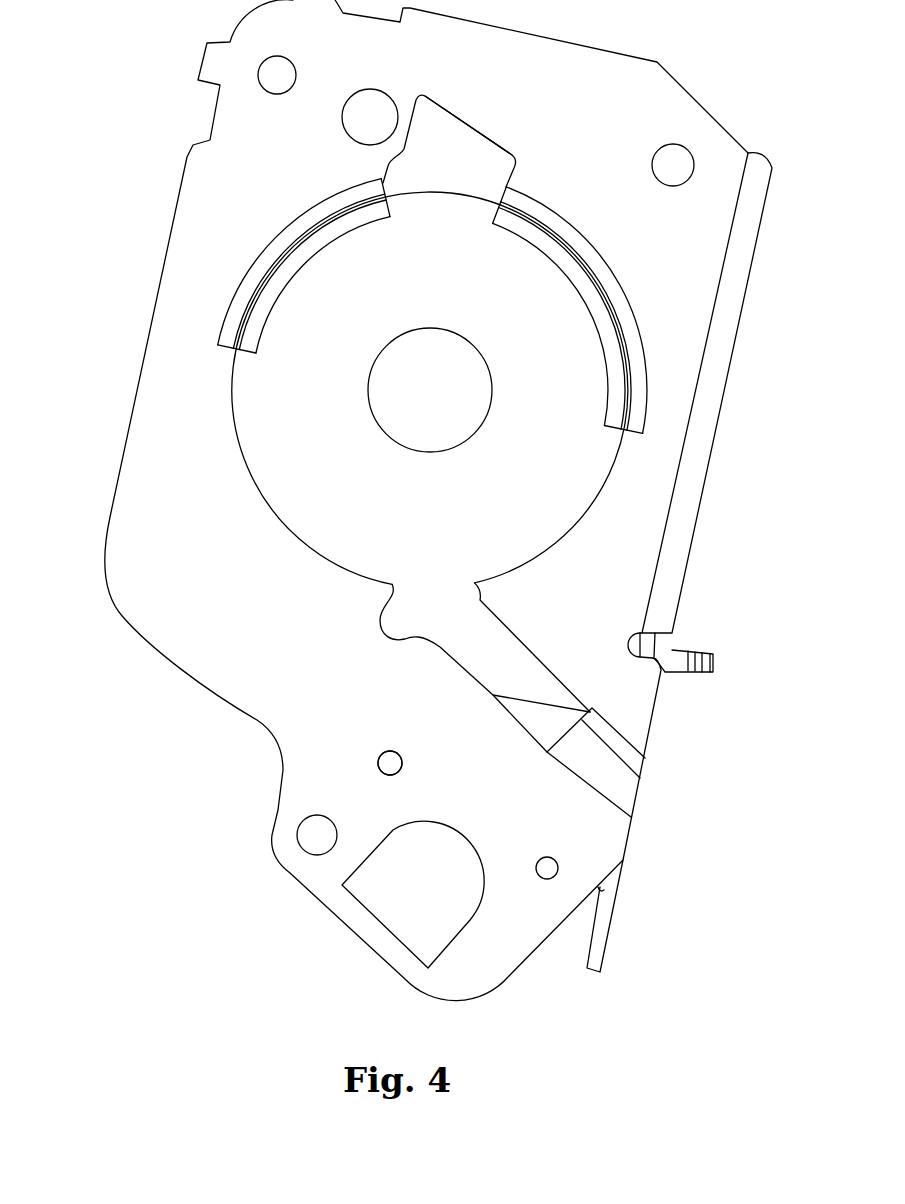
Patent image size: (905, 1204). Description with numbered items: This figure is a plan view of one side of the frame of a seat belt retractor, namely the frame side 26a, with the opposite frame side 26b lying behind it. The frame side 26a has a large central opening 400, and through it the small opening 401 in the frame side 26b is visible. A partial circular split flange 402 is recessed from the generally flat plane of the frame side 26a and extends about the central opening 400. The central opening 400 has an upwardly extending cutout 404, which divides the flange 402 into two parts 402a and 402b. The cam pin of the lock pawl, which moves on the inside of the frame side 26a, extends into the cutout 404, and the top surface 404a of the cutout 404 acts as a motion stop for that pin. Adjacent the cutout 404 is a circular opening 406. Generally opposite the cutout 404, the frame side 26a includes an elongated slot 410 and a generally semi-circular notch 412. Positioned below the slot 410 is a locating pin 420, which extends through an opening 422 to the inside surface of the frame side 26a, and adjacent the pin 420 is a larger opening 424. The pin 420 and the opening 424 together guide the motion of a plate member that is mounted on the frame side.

The frame side 26a is at (147, 442).
The frame side 26b is at (268, 393).
The central opening 400 is at (427, 504).
The small opening 401 is at (470, 437).
The partial circular split flange 402 is at (432, 282).
The flange part 402a is at (360, 223).
The flange part 402b is at (553, 257).
The cutout 404 is at (479, 127).
The top surface 404a is at (448, 175).
The circular opening 406 is at (383, 93).
The elongated slot 410 is at (552, 686).
The notch 412 is at (405, 643).
The locating pin 420 is at (401, 756).
The opening 422 is at (382, 773).
The opening 424 is at (433, 903).